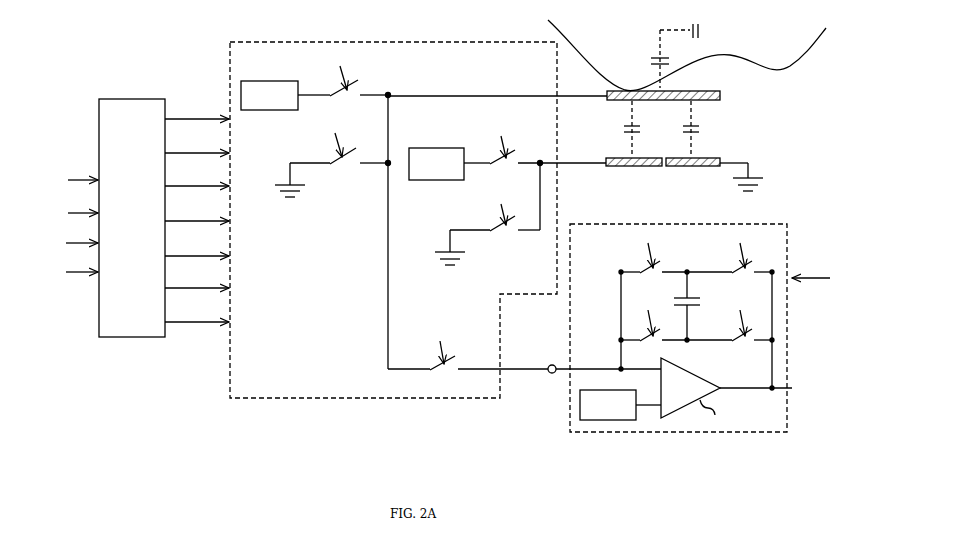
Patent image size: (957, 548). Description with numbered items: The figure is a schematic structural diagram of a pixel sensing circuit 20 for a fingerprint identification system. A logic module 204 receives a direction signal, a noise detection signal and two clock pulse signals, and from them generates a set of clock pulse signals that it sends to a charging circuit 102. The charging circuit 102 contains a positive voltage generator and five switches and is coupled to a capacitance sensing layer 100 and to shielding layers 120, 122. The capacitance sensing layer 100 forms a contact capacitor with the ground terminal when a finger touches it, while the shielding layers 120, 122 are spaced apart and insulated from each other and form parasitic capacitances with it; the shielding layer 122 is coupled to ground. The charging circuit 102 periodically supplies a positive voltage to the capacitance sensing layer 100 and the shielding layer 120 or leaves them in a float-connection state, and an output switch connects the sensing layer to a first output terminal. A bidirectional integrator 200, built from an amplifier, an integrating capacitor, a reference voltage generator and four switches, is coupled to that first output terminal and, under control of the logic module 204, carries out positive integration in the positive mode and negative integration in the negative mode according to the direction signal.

The pixel sensing circuit 20 is at (124, 58).
The capacitance sensing layer 100 is at (721, 96).
The charging circuit 102 is at (230, 383).
The first-type shielding layer 120 is at (632, 167).
The second-type shielding layer 122 is at (692, 167).
The bidirectional integrator 200 is at (570, 425).
The logic module 204 is at (132, 338).